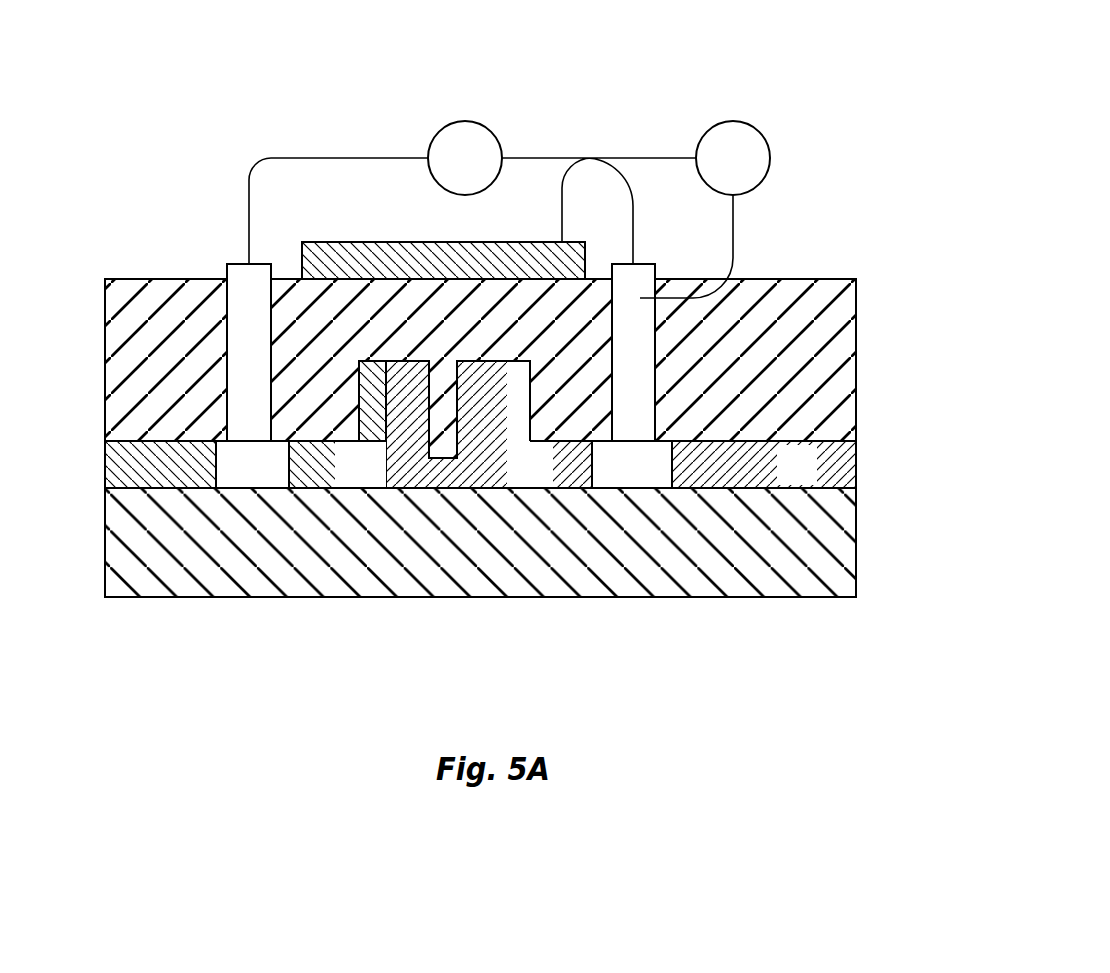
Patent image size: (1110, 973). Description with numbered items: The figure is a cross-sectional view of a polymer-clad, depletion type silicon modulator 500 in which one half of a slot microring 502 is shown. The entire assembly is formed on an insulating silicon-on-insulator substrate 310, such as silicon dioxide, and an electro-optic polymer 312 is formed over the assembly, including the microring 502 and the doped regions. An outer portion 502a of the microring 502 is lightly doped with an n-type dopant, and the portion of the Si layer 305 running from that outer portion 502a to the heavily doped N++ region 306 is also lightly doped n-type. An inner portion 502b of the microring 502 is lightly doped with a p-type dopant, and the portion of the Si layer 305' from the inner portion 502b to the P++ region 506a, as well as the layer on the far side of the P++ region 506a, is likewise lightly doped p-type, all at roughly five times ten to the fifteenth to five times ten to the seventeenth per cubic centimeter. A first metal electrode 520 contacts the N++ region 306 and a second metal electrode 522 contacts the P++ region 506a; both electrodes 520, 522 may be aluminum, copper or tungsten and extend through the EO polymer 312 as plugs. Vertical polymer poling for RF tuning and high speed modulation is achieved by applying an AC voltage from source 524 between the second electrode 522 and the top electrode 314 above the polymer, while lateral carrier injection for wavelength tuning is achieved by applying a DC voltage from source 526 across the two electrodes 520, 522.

The depletion type Si modulator 500 is at (146, 70).
The electro-optic polymer 312 is at (122, 365).
The insulating substrate 310 is at (122, 546).
The Si layer 305 is at (446, 464).
The Si layer 305' is at (683, 548).
The N++ region 306 is at (258, 476).
The P++ region 506a is at (360, 397).
The microring 502 is at (459, 318).
The outer portion of the microring 502a is at (367, 373).
The inner portion of the microring 502b is at (490, 423).
The top electrode 314 is at (382, 253).
The first metal electrode 520 is at (243, 268).
The second metal electrode 522 is at (635, 278).
The AC voltage source 524 is at (441, 132).
The DC voltage source 526 is at (709, 130).